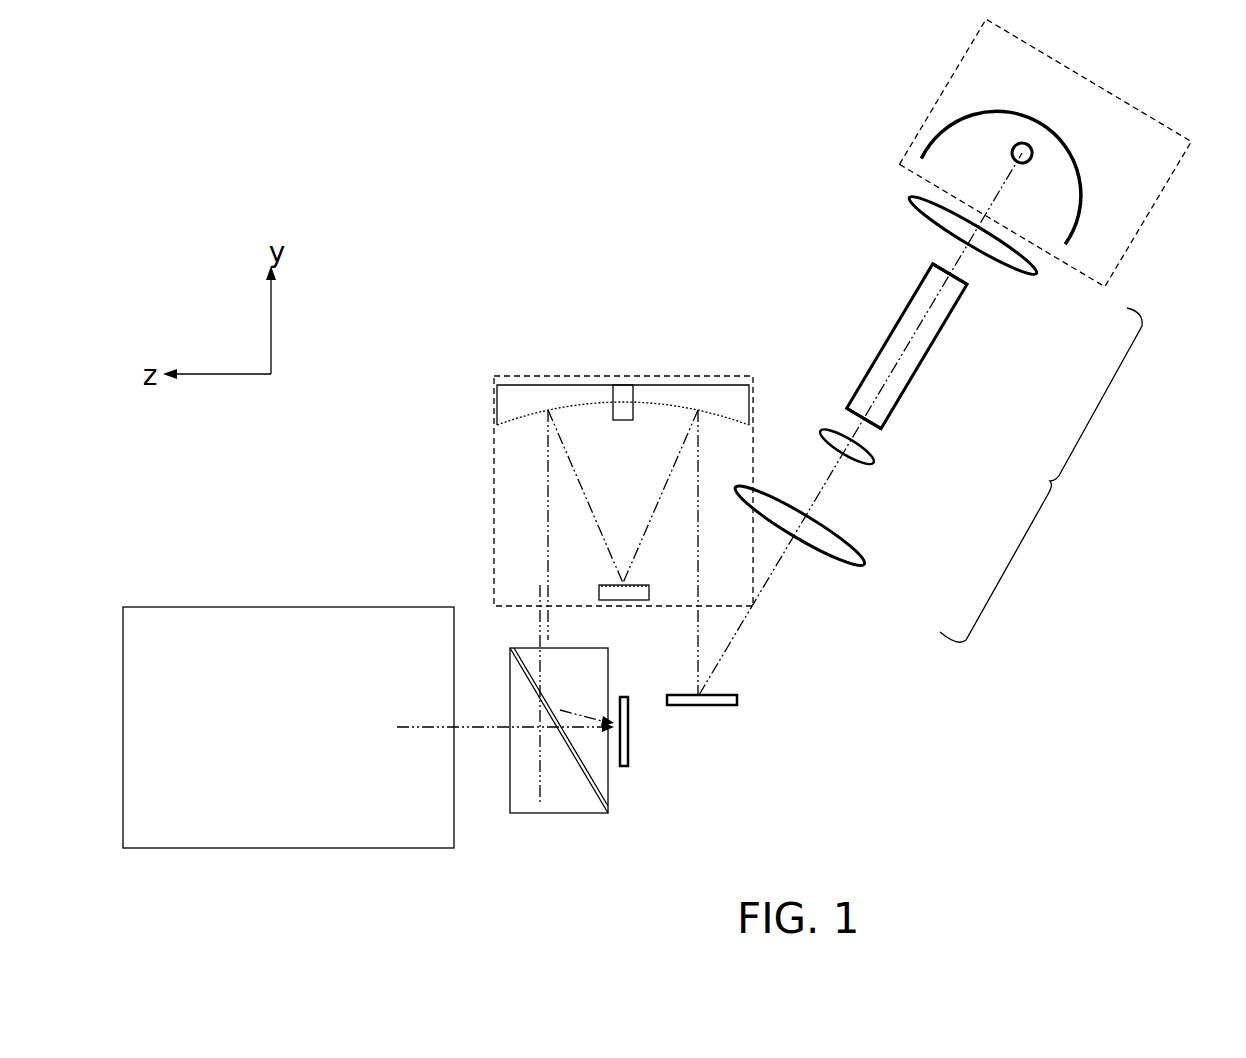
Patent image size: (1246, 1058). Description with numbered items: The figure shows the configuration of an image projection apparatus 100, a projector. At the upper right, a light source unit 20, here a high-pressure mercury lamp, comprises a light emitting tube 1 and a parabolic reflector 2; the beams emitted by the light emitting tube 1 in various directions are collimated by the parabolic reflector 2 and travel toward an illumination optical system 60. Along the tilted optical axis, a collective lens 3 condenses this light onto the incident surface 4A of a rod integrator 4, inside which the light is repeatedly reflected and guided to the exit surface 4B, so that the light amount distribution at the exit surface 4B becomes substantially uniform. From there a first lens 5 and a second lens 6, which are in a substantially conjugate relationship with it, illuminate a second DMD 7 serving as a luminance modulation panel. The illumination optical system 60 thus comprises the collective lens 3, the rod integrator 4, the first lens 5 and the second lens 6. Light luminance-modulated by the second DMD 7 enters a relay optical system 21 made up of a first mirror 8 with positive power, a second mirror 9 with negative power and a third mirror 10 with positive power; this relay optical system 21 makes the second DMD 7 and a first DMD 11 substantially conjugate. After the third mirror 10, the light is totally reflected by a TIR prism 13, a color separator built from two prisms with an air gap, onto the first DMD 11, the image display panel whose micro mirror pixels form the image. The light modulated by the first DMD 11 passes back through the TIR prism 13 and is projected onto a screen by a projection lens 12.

The image projection apparatus 100 is at (1197, 45).
The light source unit 20 is at (1118, 260).
The light emitting tube 1 is at (1028, 148).
The parabolic reflector 2 is at (1080, 186).
The collective lens 3 is at (1030, 275).
The rod integrator 4 is at (905, 360).
The incident surface 4A is at (962, 272).
The exit surface 4B is at (868, 425).
The first lens 5 is at (872, 460).
The second lens 6 is at (853, 565).
The illumination optical system 60 is at (1041, 475).
The second DMD 7 is at (718, 704).
The first mirror 8 is at (697, 393).
The relay optical system 21 is at (615, 380).
The second mirror 9 is at (623, 595).
The third mirror 10 is at (518, 395).
The first DMD 11 is at (628, 744).
The projection lens 12 is at (323, 627).
The TIR prism 13 is at (557, 802).